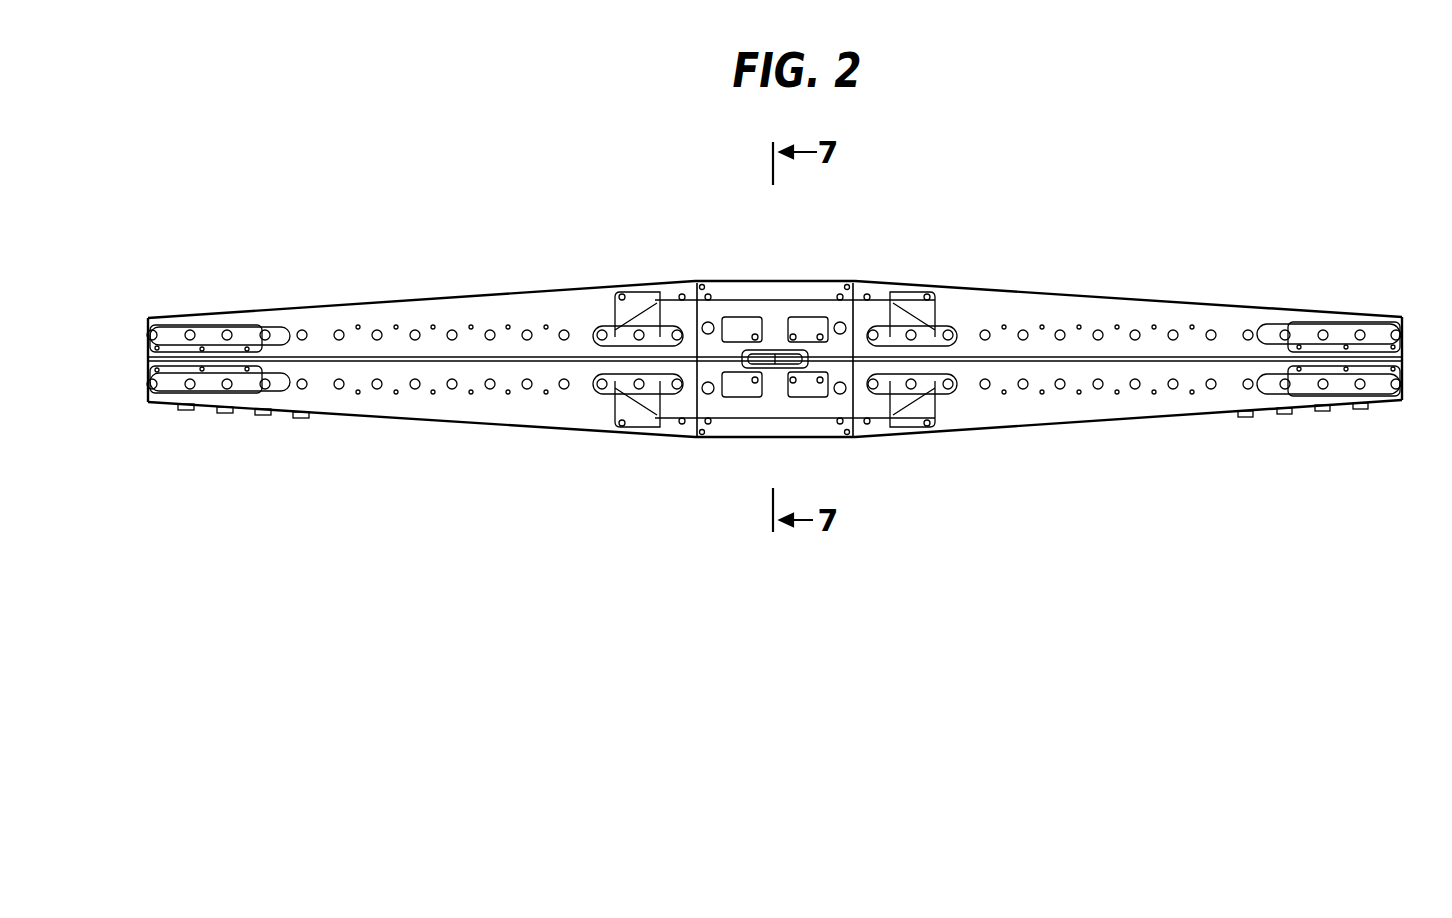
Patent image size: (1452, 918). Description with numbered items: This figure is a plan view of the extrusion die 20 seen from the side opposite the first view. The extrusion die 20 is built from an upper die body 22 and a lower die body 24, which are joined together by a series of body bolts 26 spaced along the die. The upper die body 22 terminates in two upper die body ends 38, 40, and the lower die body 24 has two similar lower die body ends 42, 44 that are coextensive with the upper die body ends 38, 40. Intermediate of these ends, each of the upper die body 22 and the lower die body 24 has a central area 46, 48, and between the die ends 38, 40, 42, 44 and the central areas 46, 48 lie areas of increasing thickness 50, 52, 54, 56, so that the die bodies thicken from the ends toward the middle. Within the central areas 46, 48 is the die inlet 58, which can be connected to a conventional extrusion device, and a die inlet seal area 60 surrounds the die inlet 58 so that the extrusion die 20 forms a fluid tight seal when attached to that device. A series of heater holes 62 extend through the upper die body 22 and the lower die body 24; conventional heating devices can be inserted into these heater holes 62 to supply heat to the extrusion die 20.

The extrusion die 20 is at (1100, 476).
The upper die body 22 is at (1180, 302).
The lower die body 24 is at (1180, 416).
The body bolts 26 is at (224, 414).
The upper die body end 38 is at (1403, 318).
The upper die body end 40 is at (147, 336).
The lower die body end 42 is at (1402, 401).
The lower die body end 44 is at (150, 372).
The central area 46 is at (731, 281).
The central area 48 is at (730, 439).
The area of increasing thickness 50 is at (1074, 296).
The area of increasing thickness 52 is at (592, 289).
The area of increasing thickness 54 is at (1052, 425).
The area of increasing thickness 56 is at (437, 422).
The die inlet 58 is at (782, 350).
The die inlet seal area 60 is at (810, 352).
The heater holes 62 is at (227, 330).